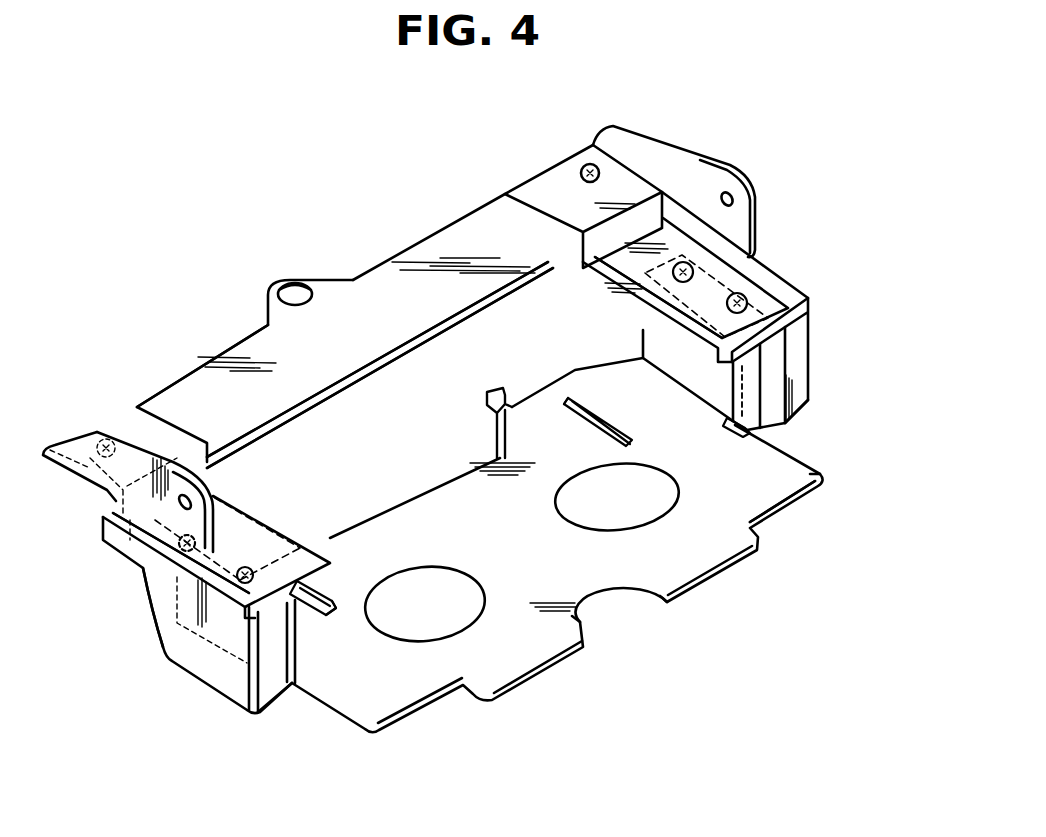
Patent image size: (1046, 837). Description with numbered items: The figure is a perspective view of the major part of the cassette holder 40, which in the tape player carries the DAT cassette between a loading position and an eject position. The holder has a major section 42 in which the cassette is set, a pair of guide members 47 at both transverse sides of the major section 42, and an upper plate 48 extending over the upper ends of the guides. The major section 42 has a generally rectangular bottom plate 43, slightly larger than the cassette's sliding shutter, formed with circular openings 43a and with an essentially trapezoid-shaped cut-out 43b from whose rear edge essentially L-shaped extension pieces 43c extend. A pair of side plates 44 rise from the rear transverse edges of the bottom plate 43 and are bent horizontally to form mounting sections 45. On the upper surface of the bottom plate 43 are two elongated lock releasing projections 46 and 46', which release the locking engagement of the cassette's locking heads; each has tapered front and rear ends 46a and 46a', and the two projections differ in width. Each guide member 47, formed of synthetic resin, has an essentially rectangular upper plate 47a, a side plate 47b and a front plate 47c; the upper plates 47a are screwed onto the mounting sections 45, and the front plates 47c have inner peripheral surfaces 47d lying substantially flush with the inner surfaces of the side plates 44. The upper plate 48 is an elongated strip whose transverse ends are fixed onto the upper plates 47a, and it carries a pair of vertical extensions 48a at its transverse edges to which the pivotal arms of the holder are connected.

The cassette holder 40 is at (203, 307).
The major section 42 is at (742, 570).
The bottom plate 43 is at (790, 468).
The circular openings 43a is at (600, 523).
The trapezoid-shaped cut-out 43b is at (442, 485).
The L-shaped extension pieces 43c is at (497, 388).
The side plates 44 is at (247, 628).
The mounting sections 45 is at (755, 270).
The lock releasing projection 46 is at (352, 573).
The tapered front and rear ends 46a is at (316, 564).
The lock releasing projection 46' is at (615, 416).
The tapered front and rear ends 46a' is at (616, 378).
The guide members 47 is at (147, 610).
The upper plate 47a is at (783, 285).
The side plate 47b is at (160, 650).
The front plate 47c is at (270, 697).
The inner peripheral surface 47d is at (740, 435).
The upper plate 48 is at (440, 230).
The vertical extensions 48a is at (745, 205).